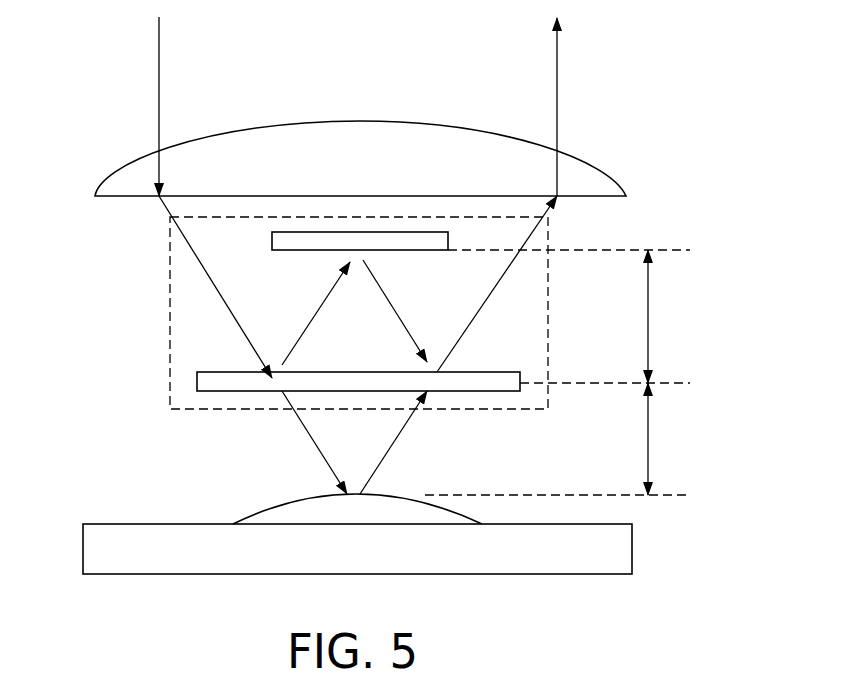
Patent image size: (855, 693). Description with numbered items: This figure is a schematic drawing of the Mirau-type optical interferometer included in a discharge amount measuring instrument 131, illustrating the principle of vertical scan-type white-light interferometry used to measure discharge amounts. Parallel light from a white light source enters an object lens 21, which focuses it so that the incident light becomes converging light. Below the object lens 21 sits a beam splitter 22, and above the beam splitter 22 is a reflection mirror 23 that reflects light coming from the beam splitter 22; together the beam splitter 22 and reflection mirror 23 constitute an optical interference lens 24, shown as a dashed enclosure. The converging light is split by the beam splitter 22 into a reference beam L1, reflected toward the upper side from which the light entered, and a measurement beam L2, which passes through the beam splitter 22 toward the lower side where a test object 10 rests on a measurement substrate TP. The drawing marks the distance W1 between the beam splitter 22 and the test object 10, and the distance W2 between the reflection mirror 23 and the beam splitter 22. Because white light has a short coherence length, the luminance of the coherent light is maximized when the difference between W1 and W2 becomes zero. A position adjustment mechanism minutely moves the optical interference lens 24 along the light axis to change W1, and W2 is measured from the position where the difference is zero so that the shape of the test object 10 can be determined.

The discharge amount measuring instrument 131 is at (695, 134).
The object lens 21 is at (133, 176).
The beam splitter 22 is at (197, 382).
The reflection mirror 23 is at (272, 241).
The optical interference lens 24 is at (170, 320).
The test object 10 is at (270, 515).
The measurement substrate TP is at (620, 550).
The reference beam L1 is at (310, 319).
The measurement beam L2 is at (303, 431).
The distance between the beam splitter and test object W1 is at (562, 439).
The distance between the reflection mirror and beam splitter W2 is at (573, 316).